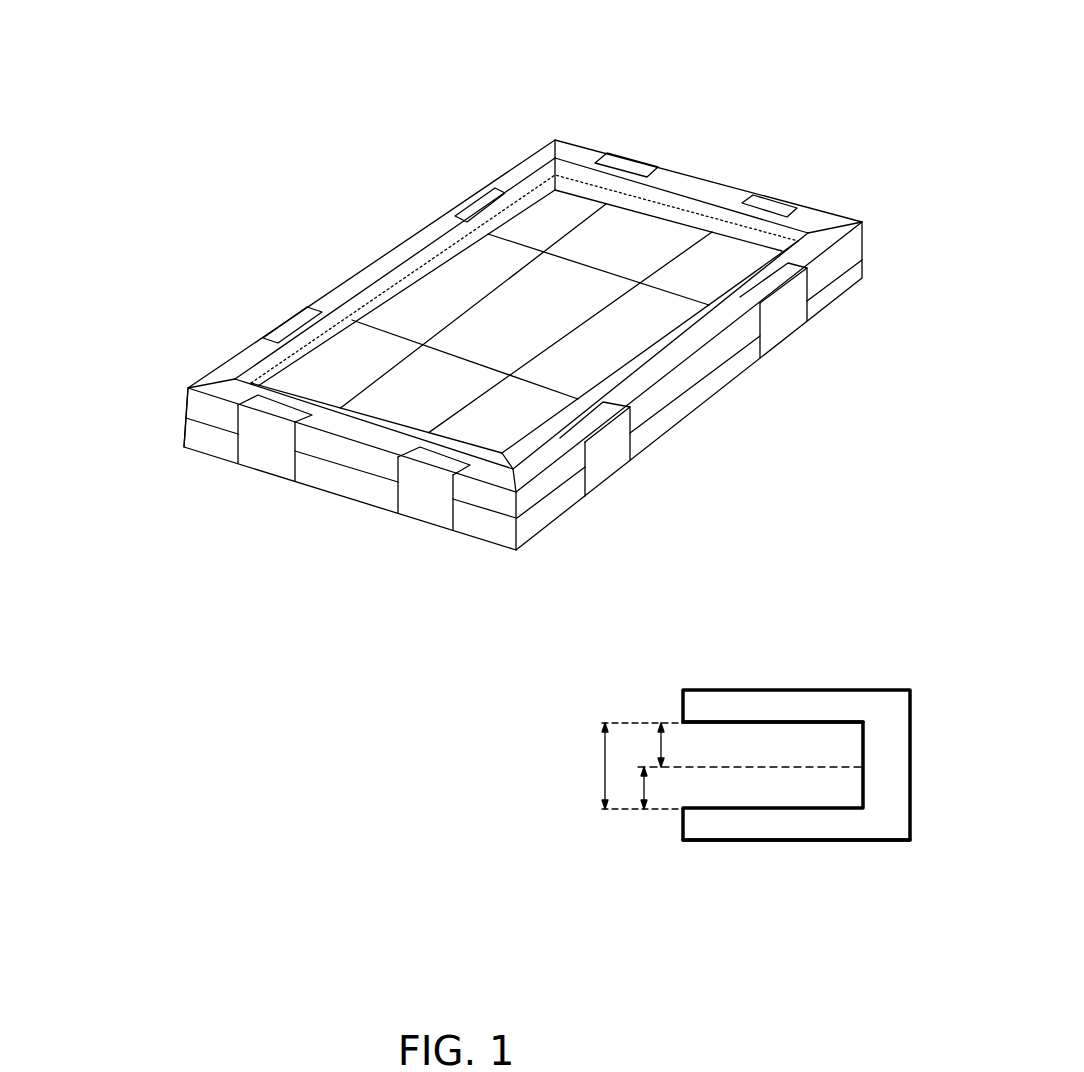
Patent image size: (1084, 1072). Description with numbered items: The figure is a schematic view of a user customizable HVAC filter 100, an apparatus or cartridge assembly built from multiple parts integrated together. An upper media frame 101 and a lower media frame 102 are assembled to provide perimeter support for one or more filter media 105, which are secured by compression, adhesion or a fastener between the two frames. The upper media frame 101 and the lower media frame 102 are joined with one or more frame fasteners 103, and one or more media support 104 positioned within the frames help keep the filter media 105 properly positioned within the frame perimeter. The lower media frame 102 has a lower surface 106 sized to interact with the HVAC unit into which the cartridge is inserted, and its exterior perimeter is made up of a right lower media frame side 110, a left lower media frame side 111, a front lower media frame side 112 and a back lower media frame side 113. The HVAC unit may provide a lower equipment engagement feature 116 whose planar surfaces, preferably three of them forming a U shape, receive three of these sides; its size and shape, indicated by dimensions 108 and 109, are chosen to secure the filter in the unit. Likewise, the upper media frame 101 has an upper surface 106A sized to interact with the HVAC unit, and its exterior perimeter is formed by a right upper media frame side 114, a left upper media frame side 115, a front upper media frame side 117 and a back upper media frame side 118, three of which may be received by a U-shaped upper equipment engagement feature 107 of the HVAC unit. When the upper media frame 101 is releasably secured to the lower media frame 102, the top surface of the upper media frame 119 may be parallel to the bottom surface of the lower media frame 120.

The user customizable HVAC filter 100 is at (190, 89).
The upper media frame 101 is at (243, 342).
The lower media frame 102 is at (193, 448).
The frame fastener 103 is at (603, 467).
The media support 104 is at (553, 145).
The filter media 105 is at (480, 340).
The lower surface 106 is at (675, 810).
The upper surface 106A is at (682, 720).
The upper equipment engagement feature 107 is at (780, 690).
The size dimension of lower equipment engagement feature 108 is at (662, 752).
The size dimension of lower equipment engagement feature 109 is at (602, 753).
The right lower media frame side 110 is at (688, 420).
The left lower media frame side 111 is at (365, 312).
The front lower media frame side 112 is at (378, 498).
The back lower media frame side 113 is at (638, 210).
The right upper media frame side 114 is at (785, 349).
The left upper media frame side 115 is at (507, 182).
The lower equipment engagement feature 116 is at (785, 840).
The front upper media frame side 117 is at (337, 452).
The back upper media frame side 118 is at (715, 210).
The top surface of the upper media frame 119 is at (680, 177).
The bottom surface of the lower media frame 120 is at (483, 543).